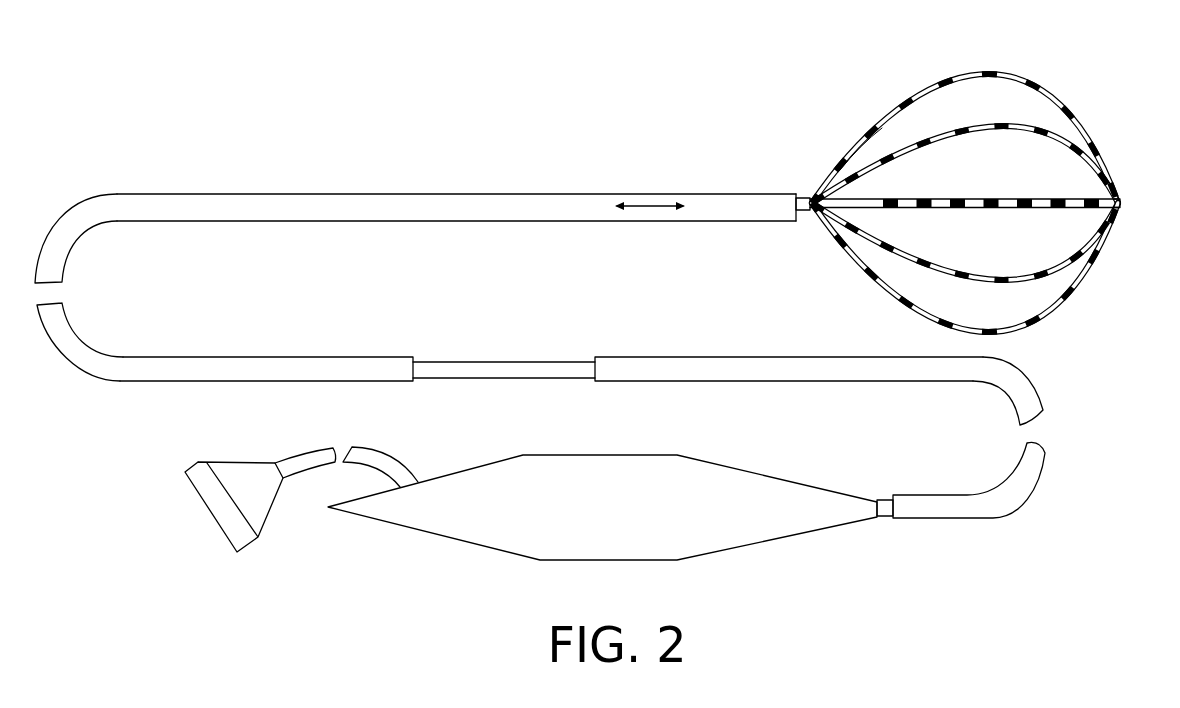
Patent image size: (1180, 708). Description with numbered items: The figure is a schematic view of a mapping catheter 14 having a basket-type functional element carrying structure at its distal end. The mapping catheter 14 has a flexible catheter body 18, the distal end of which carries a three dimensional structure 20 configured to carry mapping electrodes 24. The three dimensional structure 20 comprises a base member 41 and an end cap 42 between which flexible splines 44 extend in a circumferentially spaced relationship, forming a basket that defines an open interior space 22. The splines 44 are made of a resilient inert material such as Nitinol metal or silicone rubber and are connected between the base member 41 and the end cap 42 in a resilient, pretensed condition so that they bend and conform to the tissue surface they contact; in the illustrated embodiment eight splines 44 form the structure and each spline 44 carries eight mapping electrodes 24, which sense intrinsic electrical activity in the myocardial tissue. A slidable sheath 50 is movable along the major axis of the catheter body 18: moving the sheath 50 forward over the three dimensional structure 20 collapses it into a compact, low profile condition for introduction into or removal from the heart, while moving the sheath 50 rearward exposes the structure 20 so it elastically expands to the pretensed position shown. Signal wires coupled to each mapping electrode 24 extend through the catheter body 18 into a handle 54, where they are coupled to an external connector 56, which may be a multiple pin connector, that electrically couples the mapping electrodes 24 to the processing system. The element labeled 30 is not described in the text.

The mapping catheter 14 is at (512, 92).
The slidable sheath 50 is at (660, 192).
The flexible catheter body 18 is at (804, 196).
The base member 41 is at (812, 216).
The three dimensional structure 20 is at (1112, 105).
The mapping electrodes 24 is at (1067, 98).
The electrodes 30 is at (1000, 323).
The open interior space 22 is at (1020, 257).
The end cap 42 is at (1122, 203).
The flexible splines 44 is at (880, 126).
The handle 54 is at (762, 477).
The external connector 56 is at (200, 470).